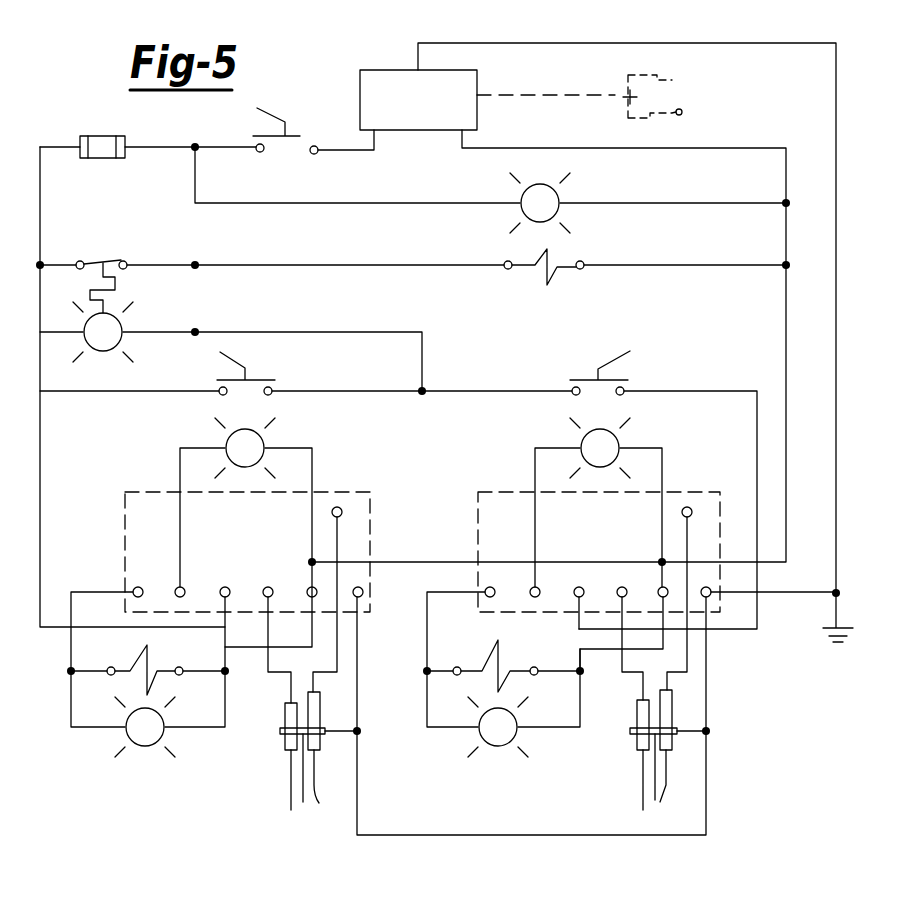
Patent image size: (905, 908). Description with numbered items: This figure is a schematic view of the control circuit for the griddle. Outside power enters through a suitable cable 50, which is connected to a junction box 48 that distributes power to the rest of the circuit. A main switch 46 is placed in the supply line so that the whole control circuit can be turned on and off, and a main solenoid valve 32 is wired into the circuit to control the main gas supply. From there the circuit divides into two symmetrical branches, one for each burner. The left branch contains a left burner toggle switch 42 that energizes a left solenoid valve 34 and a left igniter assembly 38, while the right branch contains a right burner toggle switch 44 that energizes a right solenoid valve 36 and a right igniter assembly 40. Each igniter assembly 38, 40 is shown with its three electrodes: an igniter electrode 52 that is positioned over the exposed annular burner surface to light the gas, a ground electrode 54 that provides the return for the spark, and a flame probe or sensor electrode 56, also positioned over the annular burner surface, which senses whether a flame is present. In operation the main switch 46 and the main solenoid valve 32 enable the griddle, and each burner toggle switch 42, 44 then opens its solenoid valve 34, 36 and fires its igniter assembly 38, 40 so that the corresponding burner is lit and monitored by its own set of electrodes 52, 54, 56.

The main solenoid valve 32 is at (500, 257).
The left solenoid valve 34 is at (60, 708).
The right solenoid valve 36 is at (447, 730).
The left igniter assembly 38 is at (333, 492).
The right igniter assembly 40 is at (498, 492).
The left burner toggle switch 42 is at (233, 360).
The right burner toggle switch 44 is at (613, 358).
The main switch 46 is at (280, 117).
The junction box 48 is at (385, 82).
The cable 50 is at (545, 95).
The igniter electrode 52 is at (305, 802).
The ground electrode 54 is at (300, 785).
The flame probe or sensor electrode 56 is at (288, 770).